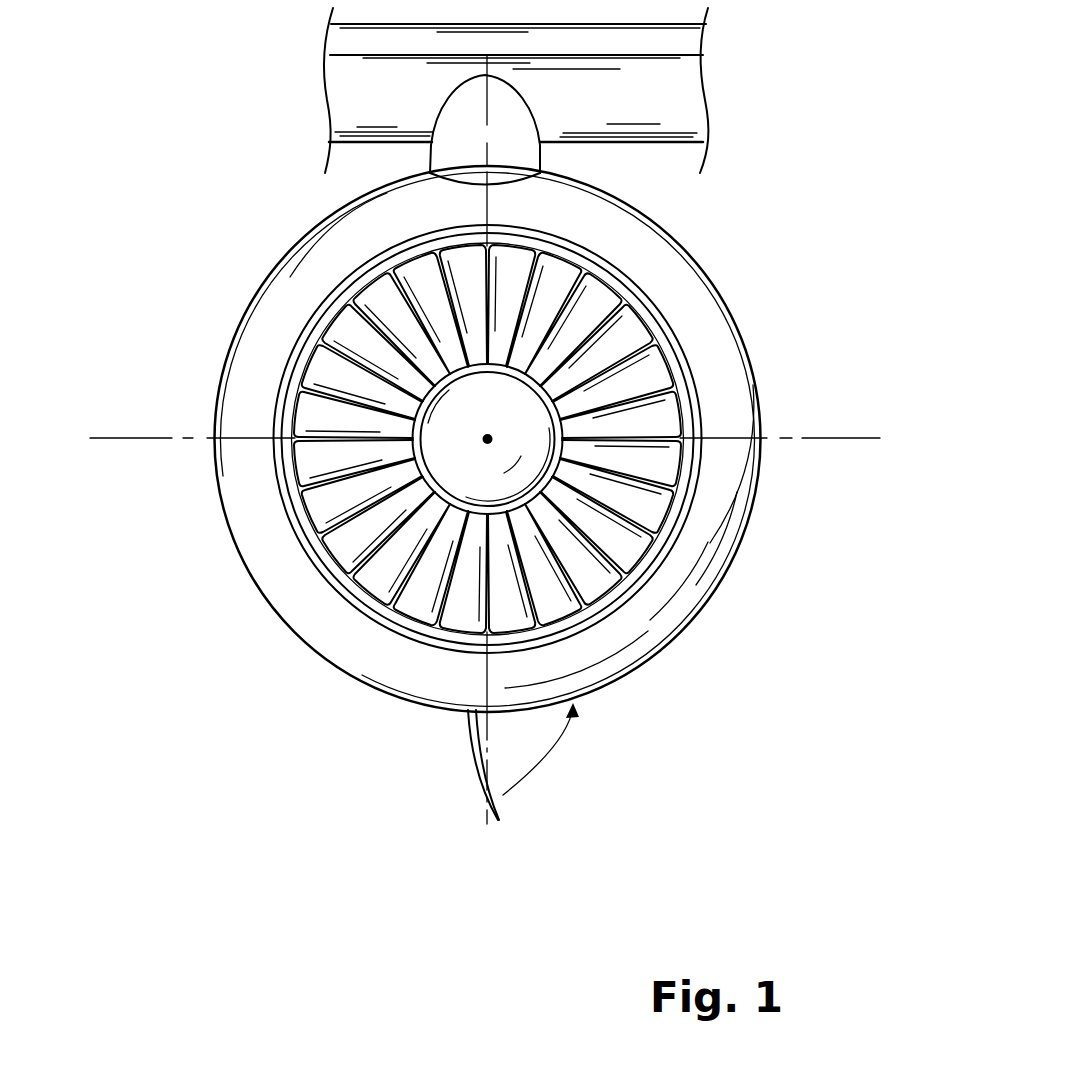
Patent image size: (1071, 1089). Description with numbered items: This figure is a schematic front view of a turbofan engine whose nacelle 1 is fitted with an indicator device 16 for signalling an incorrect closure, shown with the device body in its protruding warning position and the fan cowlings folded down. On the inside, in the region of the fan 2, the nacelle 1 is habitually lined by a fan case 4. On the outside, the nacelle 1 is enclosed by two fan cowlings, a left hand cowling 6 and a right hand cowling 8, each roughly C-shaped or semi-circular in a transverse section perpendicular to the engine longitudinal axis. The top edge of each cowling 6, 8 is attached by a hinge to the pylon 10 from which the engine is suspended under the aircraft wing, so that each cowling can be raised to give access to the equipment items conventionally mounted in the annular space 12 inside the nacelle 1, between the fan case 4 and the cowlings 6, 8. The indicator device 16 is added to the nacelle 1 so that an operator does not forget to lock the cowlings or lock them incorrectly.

The nacelle 1 is at (248, 109).
The fan 2 is at (343, 333).
The fan case 4 is at (312, 560).
The left hand fan cowling 6 is at (762, 405).
The right hand fan cowling 8 is at (215, 403).
The pylon 10 is at (562, 116).
The annular space 12 is at (695, 577).
The indicator device 16 is at (458, 774).